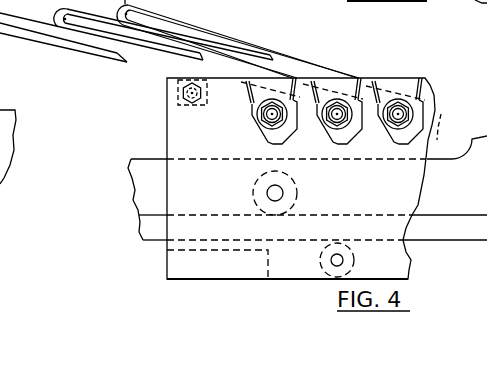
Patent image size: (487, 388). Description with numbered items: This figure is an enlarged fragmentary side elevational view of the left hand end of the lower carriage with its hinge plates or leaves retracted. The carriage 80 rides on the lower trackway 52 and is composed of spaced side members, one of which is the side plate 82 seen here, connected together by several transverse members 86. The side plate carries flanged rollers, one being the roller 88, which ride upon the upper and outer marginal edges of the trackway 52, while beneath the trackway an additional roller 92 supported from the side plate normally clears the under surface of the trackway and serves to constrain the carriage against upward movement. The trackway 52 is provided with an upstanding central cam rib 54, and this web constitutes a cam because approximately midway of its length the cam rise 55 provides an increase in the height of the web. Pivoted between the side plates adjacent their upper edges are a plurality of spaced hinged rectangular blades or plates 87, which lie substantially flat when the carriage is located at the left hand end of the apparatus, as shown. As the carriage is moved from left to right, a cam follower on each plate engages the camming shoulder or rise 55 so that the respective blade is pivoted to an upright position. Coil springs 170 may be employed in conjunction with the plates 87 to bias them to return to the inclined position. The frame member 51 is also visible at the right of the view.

The side plate 82 is at (183, 132).
The hinged rectangular blade 87 is at (302, 59).
The coil spring 170 is at (418, 77).
The frame member 51 is at (441, 114).
The cam rise 55 is at (467, 148).
The central cam rib 54 is at (146, 186).
The lower trackway 52 is at (147, 222).
The transverse member 86 is at (200, 265).
The flanged roller 88 is at (260, 203).
The carriage 80 is at (293, 265).
The roller 92 is at (327, 270).